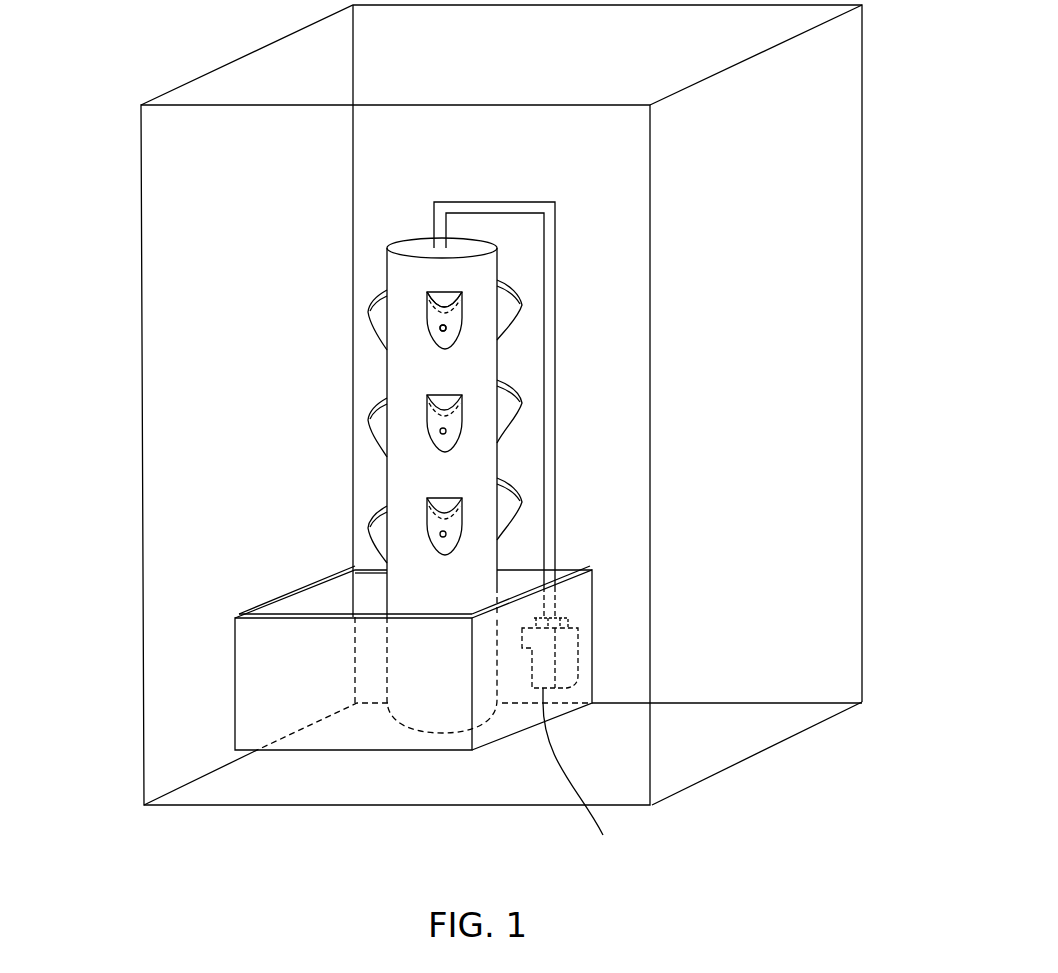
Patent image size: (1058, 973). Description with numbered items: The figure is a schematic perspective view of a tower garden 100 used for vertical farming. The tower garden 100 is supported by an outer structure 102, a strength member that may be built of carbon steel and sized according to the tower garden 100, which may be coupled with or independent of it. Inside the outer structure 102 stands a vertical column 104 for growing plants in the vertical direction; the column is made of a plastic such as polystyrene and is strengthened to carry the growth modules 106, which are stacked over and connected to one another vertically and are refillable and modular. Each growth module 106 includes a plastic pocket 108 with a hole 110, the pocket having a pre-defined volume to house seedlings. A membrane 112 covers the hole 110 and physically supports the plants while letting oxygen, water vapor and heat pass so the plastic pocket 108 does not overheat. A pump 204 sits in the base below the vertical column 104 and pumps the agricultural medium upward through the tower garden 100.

The tower garden 100 is at (327, 244).
The outer structure 102 is at (141, 223).
The vertical column 104 is at (478, 370).
The growth modules 106 is at (513, 417).
The plastic pocket 108 is at (427, 420).
The hole 110 is at (440, 328).
The membrane 112 is at (427, 312).
The pump 204 is at (575, 742).